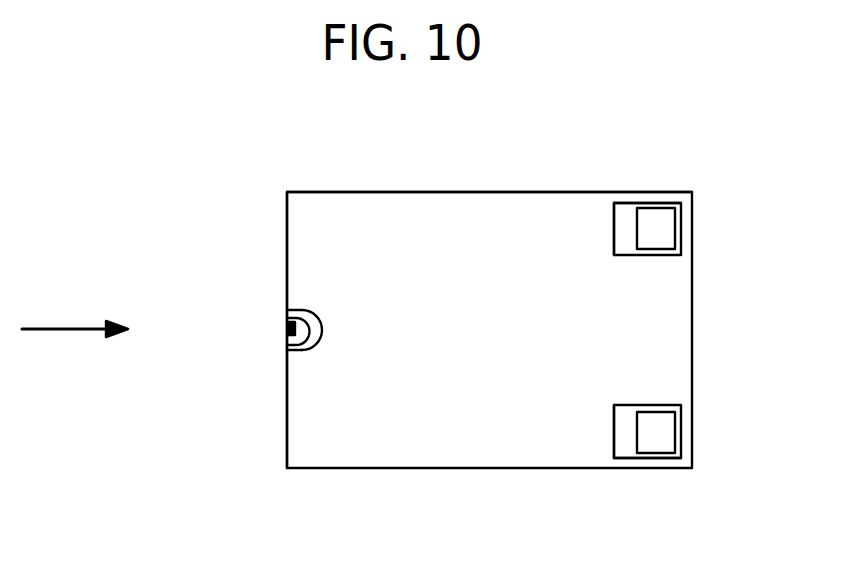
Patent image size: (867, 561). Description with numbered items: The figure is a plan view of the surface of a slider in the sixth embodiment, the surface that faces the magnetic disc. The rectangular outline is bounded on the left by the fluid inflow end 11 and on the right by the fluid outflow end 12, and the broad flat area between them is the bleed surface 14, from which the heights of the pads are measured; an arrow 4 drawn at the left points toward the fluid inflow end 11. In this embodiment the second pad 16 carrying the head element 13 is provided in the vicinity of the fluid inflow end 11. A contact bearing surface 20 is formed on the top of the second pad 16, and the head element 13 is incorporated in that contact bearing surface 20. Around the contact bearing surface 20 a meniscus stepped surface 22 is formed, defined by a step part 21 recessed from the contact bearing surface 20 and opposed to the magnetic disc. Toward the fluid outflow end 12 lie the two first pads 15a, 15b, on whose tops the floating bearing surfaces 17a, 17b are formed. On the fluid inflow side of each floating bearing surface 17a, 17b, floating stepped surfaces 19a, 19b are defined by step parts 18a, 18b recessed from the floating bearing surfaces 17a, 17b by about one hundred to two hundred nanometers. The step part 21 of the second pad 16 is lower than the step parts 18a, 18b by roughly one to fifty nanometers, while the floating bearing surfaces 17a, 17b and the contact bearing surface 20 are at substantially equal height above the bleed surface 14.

The viewing direction arrow 4 is at (70, 328).
The fluid inflow end 11 is at (287, 377).
The fluid outflow end 12 is at (692, 310).
The head element 13 is at (288, 329).
The bleed surface 14 is at (494, 298).
The first pad 15a is at (647, 203).
The first pad 15b is at (647, 458).
The second pad 16 is at (302, 312).
The floating bearing surface 17a is at (658, 230).
The floating bearing surface 17b is at (658, 430).
The step part 18a is at (637, 228).
The step part 18b is at (637, 432).
The floating stepped surface 19a is at (622, 233).
The floating stepped surface 19b is at (622, 423).
The contact bearing surface 20 is at (289, 306).
The step part 21 is at (305, 352).
The meniscus stepped surface 22 is at (312, 340).